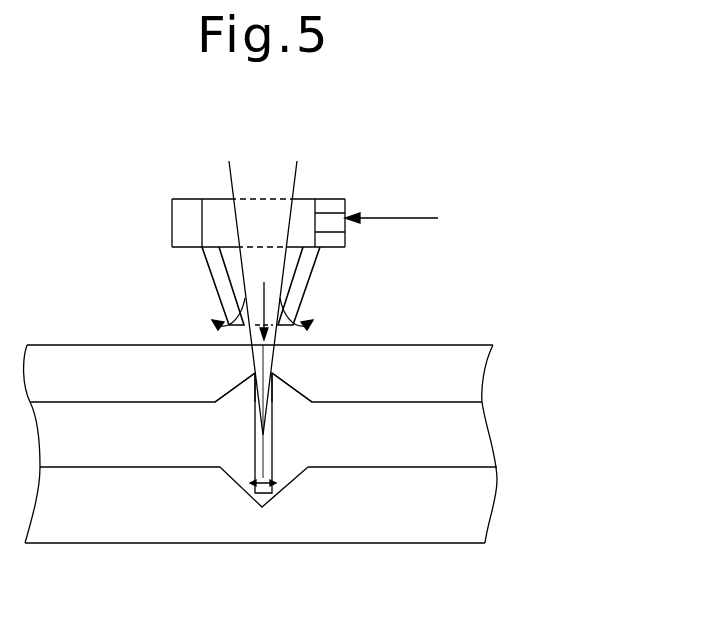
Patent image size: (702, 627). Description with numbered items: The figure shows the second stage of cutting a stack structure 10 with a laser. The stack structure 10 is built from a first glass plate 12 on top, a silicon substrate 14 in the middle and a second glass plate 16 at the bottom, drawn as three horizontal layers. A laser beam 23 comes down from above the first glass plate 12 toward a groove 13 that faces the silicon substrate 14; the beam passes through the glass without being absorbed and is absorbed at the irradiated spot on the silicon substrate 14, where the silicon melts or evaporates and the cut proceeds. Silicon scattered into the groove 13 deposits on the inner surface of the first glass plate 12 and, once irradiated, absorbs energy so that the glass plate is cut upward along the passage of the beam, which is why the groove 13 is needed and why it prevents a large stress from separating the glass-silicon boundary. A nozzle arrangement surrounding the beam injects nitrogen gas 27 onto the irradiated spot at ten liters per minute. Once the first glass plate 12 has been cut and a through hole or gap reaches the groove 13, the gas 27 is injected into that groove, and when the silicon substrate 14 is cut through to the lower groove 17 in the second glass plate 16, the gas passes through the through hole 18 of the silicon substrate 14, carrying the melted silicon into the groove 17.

The stack structure 10 is at (335, 444).
The first glass plate 12 is at (473, 378).
The silicon substrate 14 is at (473, 440).
The second glass plate 16 is at (303, 507).
The groove 13 is at (283, 392).
The groove 17 is at (283, 477).
The through hole 18 is at (268, 433).
The laser beam 23 is at (268, 177).
The nitrogen gas 27 is at (300, 315).